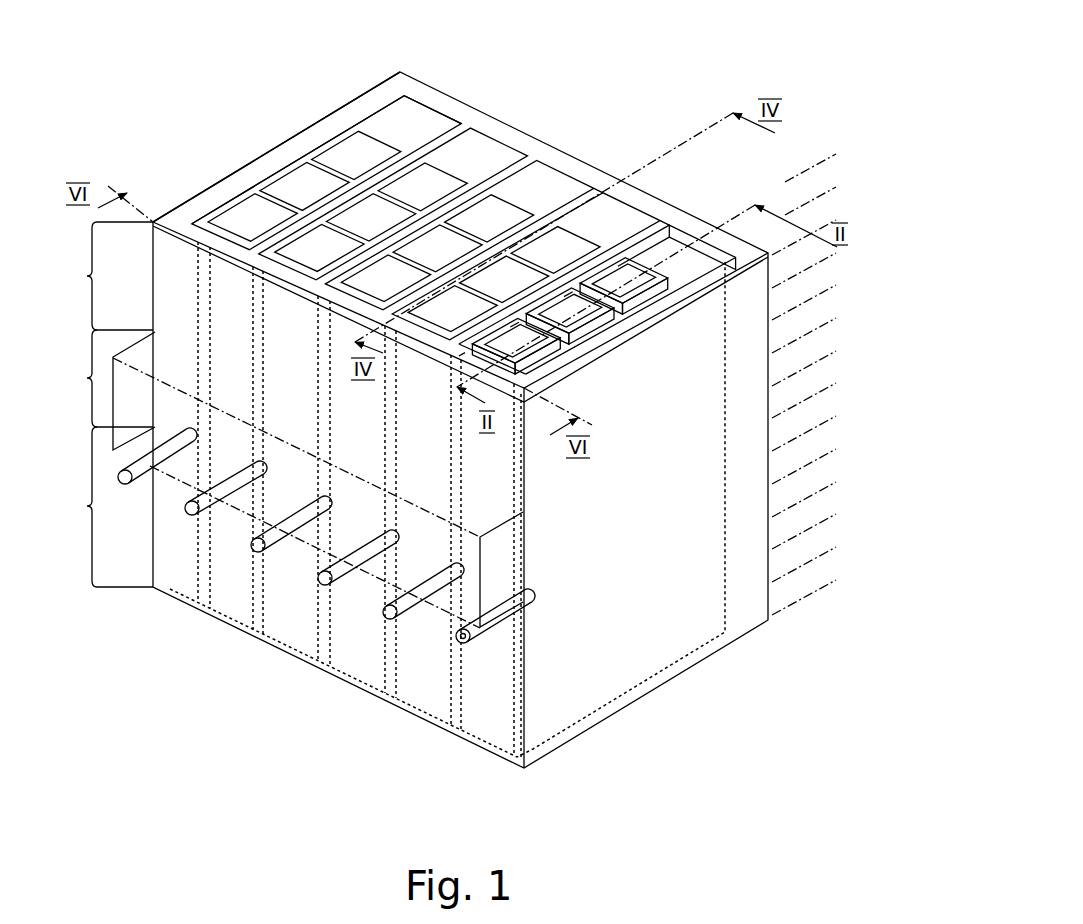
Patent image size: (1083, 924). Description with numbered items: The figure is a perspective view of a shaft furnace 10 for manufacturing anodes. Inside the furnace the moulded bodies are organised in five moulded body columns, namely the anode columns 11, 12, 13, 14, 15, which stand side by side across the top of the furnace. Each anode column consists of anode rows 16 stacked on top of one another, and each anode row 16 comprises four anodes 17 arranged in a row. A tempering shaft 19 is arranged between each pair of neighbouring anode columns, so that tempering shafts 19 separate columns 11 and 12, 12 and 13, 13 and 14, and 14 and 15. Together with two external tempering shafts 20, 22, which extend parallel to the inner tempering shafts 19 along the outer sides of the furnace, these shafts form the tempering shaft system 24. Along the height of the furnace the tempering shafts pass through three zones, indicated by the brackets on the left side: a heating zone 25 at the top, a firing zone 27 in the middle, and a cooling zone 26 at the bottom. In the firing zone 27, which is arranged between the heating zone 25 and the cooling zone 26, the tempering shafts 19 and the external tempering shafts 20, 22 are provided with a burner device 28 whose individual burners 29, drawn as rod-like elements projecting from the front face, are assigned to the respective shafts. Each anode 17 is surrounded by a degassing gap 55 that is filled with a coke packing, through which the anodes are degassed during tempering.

The shaft furnace 10 is at (713, 108).
The anode column 11 is at (436, 110).
The anode column 12 is at (500, 136).
The anode column 13 is at (566, 167).
The anode column 14 is at (634, 199).
The anode column 15 is at (607, 257).
The anode row 16 is at (788, 180).
The anode 17 is at (667, 247).
The tempering shaft 19 is at (598, 184).
The external tempering shaft 20 is at (620, 330).
The external tempering shaft 22 is at (277, 152).
The tempering shaft system 24 is at (312, 108).
The heating zone 25 is at (101, 276).
The cooling zone 26 is at (101, 507).
The firing zone 27 is at (286, 478).
The burner device 28 is at (294, 548).
The burner 29 is at (326, 596).
The degassing gap 55 is at (250, 204).